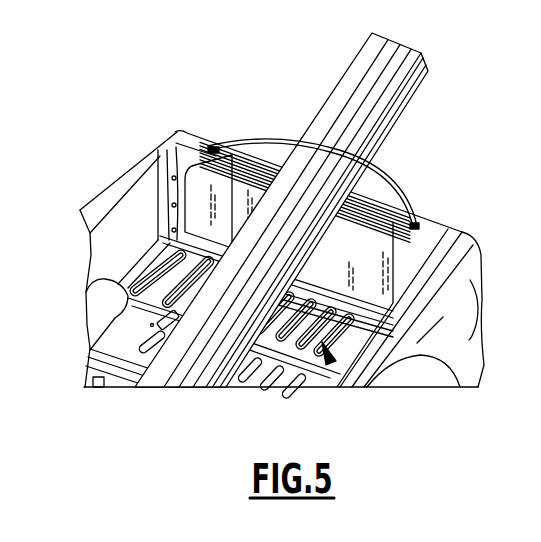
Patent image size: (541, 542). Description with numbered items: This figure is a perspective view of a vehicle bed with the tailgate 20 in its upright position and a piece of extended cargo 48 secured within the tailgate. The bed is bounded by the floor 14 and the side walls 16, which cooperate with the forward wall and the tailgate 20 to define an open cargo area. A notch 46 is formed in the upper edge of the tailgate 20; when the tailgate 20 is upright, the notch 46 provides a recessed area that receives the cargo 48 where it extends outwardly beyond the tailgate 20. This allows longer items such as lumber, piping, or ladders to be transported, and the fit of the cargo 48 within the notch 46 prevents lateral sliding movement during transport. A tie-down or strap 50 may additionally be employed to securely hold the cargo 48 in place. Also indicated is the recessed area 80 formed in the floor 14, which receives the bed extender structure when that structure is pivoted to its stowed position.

The floor 14 is at (271, 368).
The side walls 16 is at (152, 157).
The tailgate 20 is at (413, 253).
The notch 46 is at (381, 222).
The cargo 48 is at (366, 57).
The strap 50 is at (386, 176).
The recessed area 80 is at (331, 363).